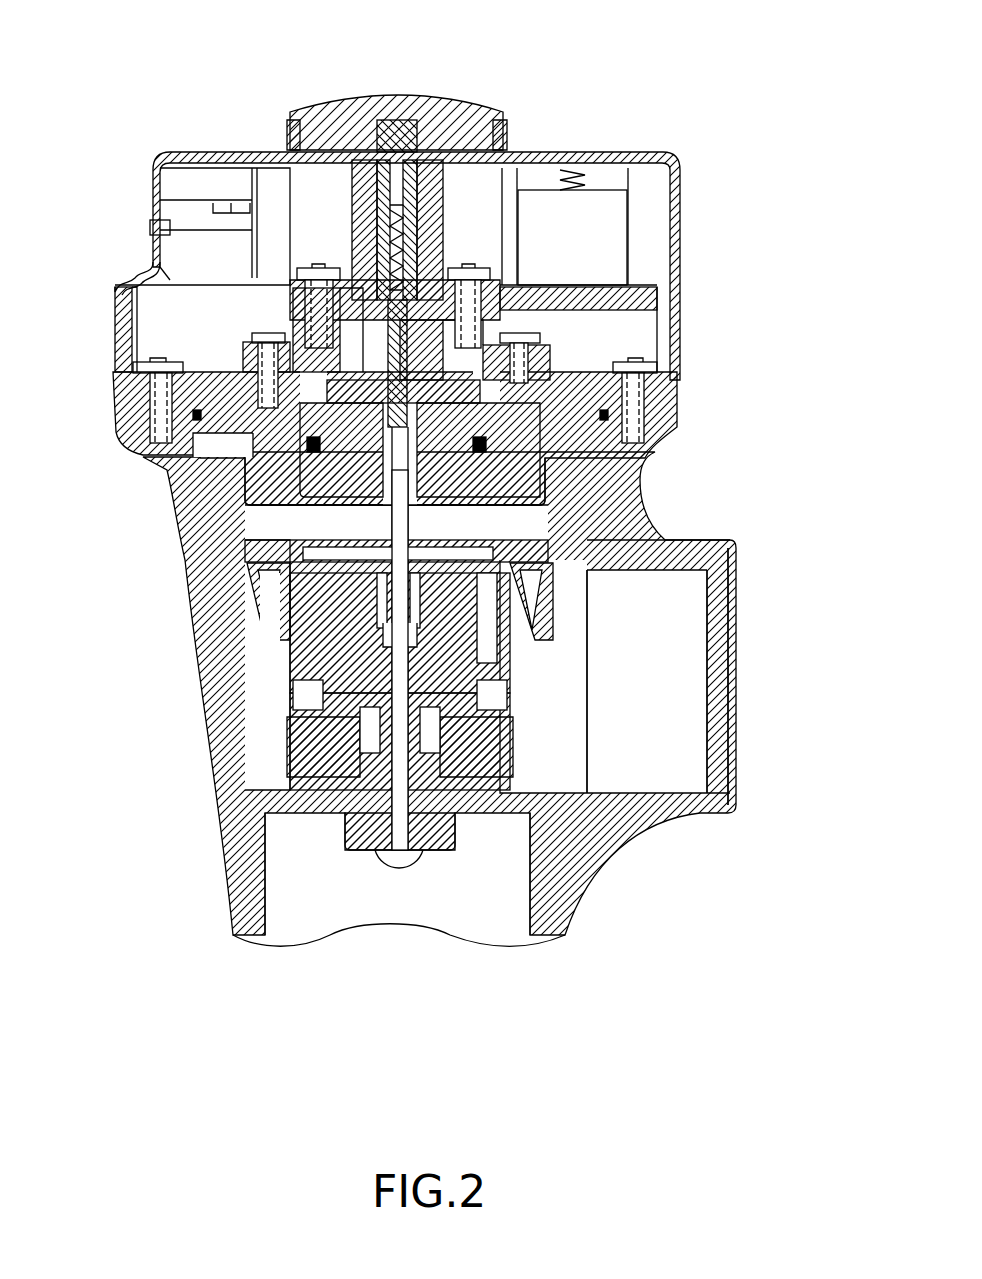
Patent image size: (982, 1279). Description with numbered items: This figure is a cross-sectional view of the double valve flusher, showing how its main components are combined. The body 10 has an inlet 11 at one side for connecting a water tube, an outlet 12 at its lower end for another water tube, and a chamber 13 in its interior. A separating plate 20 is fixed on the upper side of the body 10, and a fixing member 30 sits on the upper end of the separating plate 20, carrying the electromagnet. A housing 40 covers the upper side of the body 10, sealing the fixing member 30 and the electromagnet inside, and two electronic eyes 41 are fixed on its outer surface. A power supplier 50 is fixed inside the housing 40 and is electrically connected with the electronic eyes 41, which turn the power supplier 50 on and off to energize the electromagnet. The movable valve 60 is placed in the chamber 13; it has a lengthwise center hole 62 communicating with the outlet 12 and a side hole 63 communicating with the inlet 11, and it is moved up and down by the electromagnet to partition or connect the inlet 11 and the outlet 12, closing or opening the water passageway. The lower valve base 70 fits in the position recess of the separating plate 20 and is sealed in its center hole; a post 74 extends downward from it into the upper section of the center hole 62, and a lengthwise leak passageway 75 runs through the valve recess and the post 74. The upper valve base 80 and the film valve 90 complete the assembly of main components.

The body 10 is at (178, 563).
The inlet 11 is at (700, 737).
The outlet 12 is at (385, 913).
The chamber 13 is at (263, 757).
The separating plate 20 is at (187, 442).
The fixing member 30 is at (503, 303).
The housing 40 is at (216, 151).
The electronic eyes 41 is at (163, 262).
The power supplier 50 is at (628, 232).
The movable valve 60 is at (291, 699).
The lengthwise center hole 62 is at (397, 827).
The side hole 63 is at (492, 590).
The lower valve base 70 is at (300, 482).
The post 74 is at (550, 537).
The lengthwise leak passageway 75 is at (430, 660).
The upper valve base 80 is at (291, 316).
The film valve 90 is at (436, 409).